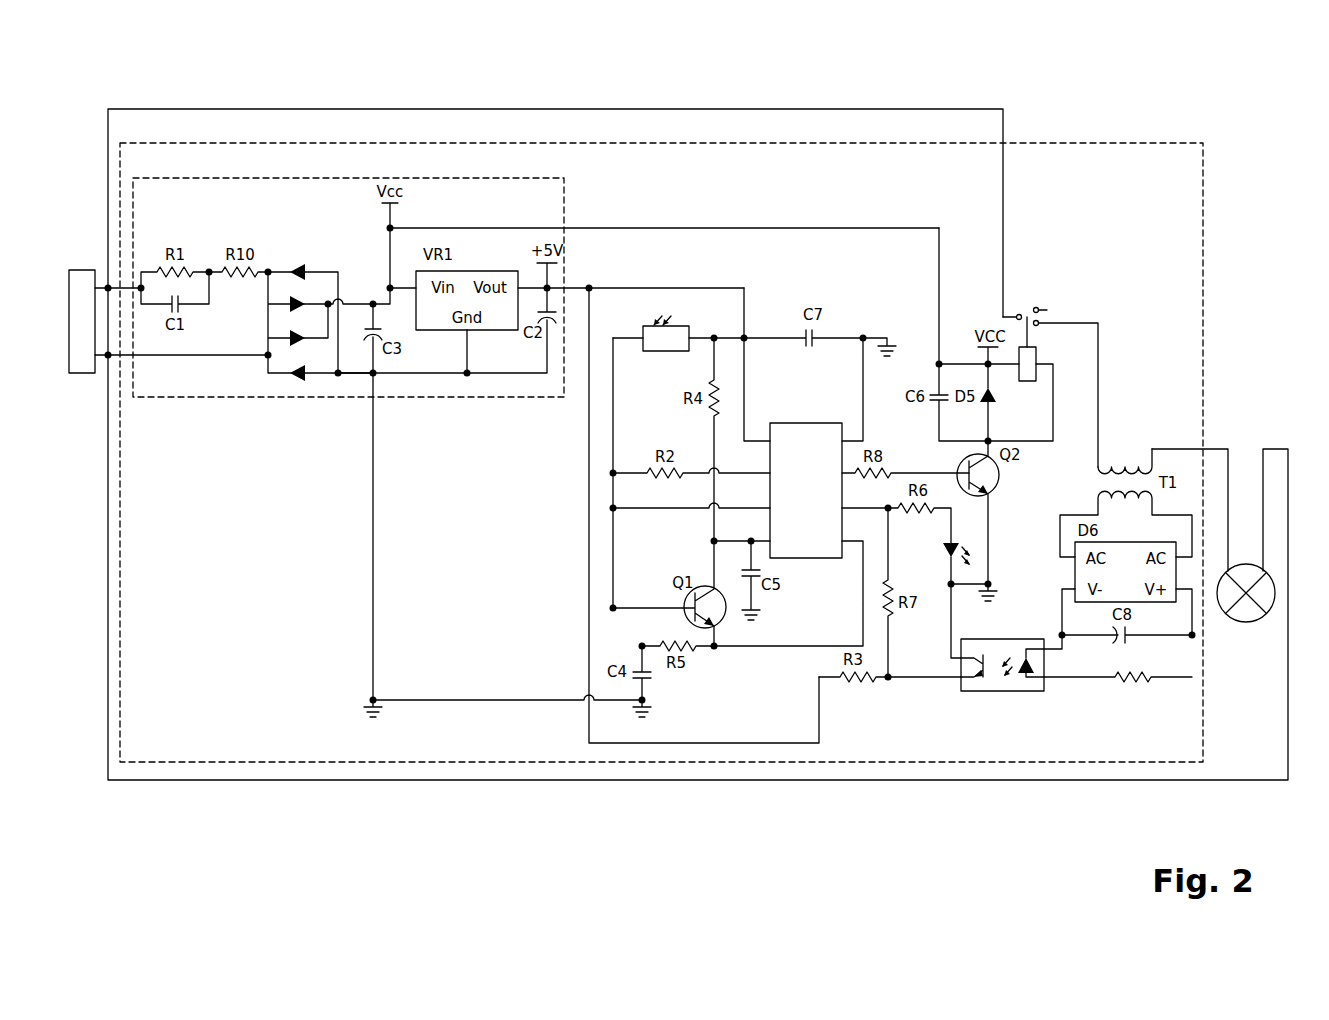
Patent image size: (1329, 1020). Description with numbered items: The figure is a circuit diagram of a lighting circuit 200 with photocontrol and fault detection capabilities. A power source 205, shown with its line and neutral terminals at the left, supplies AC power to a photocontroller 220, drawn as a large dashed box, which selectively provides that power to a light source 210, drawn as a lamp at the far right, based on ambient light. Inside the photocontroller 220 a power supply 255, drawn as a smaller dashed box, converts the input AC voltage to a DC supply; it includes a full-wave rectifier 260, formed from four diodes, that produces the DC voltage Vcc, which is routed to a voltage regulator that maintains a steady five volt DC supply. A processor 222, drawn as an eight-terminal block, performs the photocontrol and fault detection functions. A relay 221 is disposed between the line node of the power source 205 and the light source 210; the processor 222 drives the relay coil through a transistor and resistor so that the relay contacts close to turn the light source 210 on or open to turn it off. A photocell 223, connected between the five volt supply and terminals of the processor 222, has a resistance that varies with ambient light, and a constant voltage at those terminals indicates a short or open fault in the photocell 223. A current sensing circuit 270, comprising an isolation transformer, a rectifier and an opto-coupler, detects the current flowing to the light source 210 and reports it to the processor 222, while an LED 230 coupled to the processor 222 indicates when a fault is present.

The lighting circuit 200 is at (94, 57).
The power source 205 is at (167, 310).
The light source 210 is at (1246, 604).
The photocontroller 220 is at (662, 441).
The relay 221 is at (1042, 295).
The processor 222 is at (806, 480).
The photocell 223 is at (678, 344).
The LED 230 is at (953, 572).
The power supply 255 is at (250, 178).
The full-wave rectifier 260 is at (296, 236).
The current sensing circuit 270 is at (1064, 713).